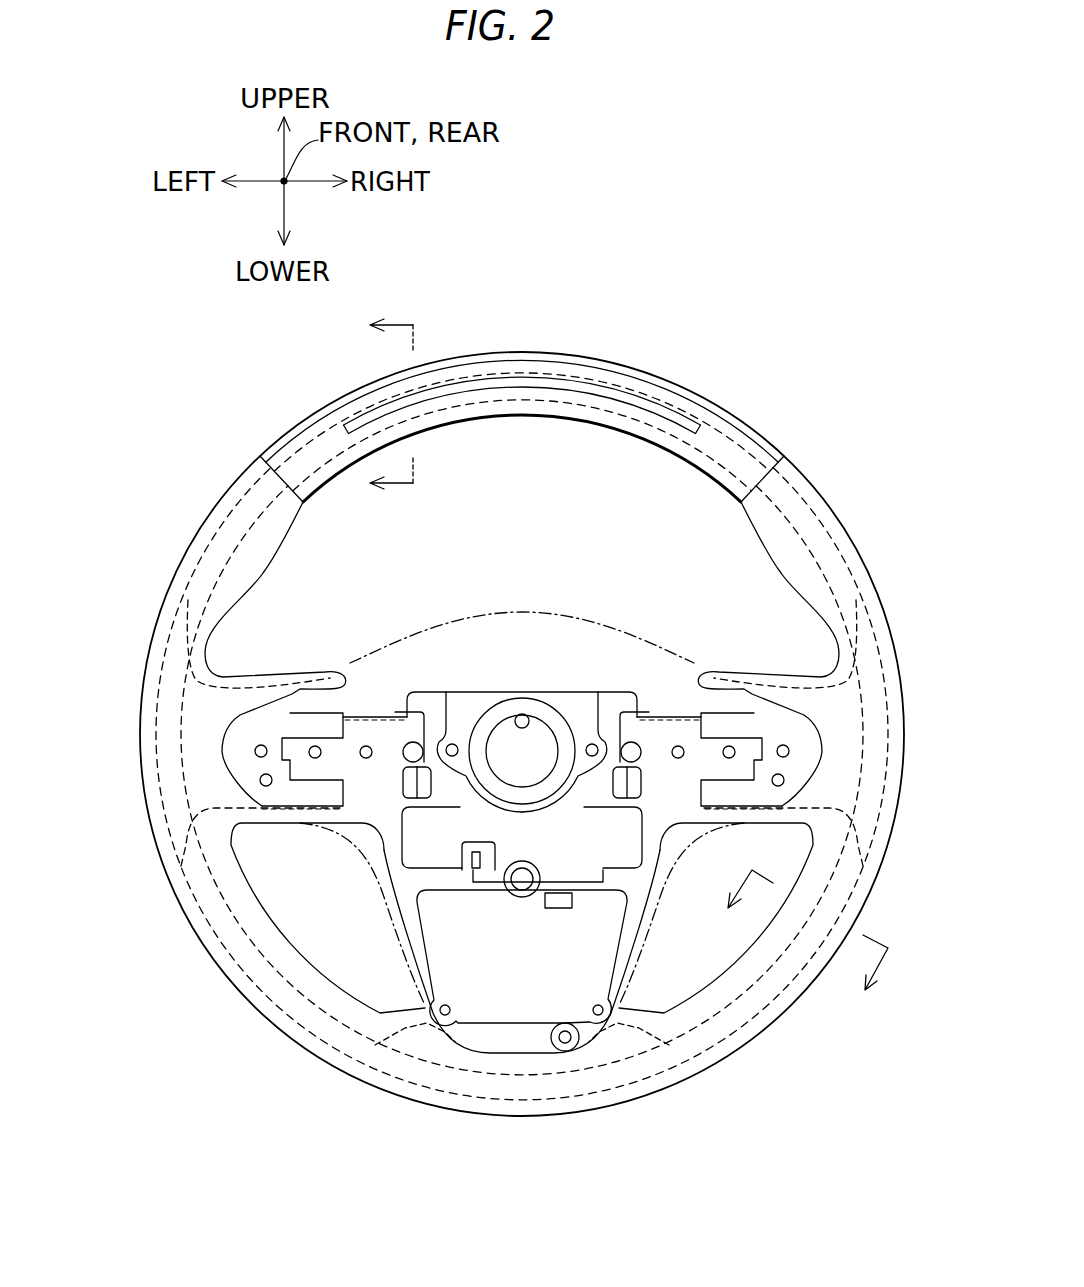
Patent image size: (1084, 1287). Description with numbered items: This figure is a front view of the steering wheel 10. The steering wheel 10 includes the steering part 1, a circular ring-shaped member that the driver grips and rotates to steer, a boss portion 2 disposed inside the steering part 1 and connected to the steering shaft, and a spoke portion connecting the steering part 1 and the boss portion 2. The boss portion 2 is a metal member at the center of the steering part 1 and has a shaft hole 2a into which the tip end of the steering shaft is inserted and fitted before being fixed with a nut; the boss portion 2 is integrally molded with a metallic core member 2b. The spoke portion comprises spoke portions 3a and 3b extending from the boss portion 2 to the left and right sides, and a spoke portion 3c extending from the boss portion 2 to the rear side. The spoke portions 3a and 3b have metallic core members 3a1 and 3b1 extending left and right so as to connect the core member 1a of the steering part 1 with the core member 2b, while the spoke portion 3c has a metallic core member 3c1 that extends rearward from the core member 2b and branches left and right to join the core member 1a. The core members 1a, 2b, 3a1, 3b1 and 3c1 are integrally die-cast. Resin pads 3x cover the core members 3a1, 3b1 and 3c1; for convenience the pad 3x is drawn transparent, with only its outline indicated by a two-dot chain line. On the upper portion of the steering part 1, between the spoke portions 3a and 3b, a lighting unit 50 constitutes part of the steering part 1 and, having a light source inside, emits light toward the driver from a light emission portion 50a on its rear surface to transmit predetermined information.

The steering wheel 10 is at (498, 672).
The steering part 1 is at (494, 652).
The core member 1a is at (200, 578).
The boss portion 2 is at (522, 718).
The shaft hole 2a is at (533, 722).
The core member 2b is at (567, 702).
The spoke portion 3a is at (263, 747).
The core member 3a1 is at (294, 738).
The spoke portion 3b is at (775, 634).
The core member 3b1 is at (749, 738).
The spoke portion 3c is at (515, 989).
The core member 3c1 is at (428, 960).
The pad 3x is at (460, 623).
The lighting unit 50 is at (529, 345).
The light emission portion 50a is at (520, 375).